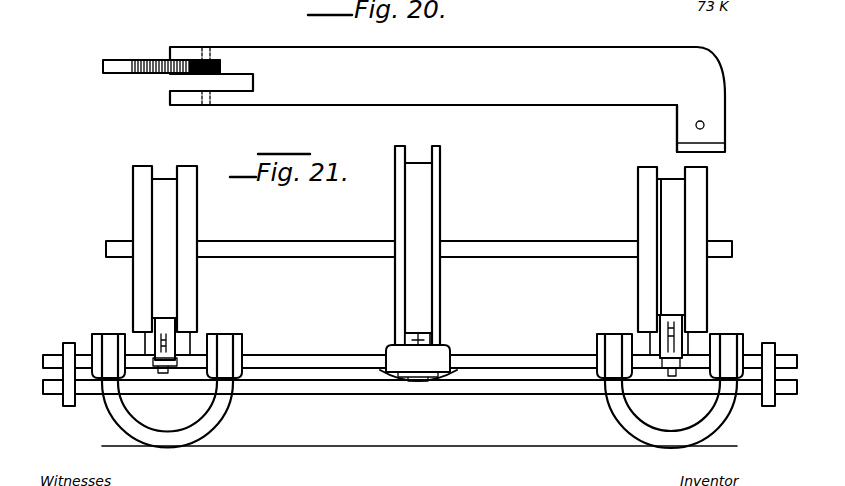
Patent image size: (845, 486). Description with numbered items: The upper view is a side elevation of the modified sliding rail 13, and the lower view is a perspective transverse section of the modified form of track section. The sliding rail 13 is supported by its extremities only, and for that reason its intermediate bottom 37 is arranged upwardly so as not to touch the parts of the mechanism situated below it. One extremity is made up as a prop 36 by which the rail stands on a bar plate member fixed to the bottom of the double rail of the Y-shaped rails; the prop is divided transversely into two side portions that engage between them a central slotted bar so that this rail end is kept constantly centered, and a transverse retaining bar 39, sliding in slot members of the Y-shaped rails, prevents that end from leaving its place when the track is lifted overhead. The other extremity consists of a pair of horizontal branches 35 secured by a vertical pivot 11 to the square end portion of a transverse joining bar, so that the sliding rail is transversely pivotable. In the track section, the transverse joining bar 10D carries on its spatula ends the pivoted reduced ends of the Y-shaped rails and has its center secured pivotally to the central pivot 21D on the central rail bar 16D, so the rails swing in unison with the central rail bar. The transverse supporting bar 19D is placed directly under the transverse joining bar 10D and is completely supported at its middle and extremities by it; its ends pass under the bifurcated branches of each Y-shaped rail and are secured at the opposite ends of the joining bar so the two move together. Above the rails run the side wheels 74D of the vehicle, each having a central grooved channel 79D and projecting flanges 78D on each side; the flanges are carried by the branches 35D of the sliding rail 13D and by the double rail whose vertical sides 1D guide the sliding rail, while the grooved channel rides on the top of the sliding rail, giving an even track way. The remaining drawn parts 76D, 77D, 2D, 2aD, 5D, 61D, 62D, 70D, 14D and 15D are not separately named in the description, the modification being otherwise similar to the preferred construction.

In FIG. 20, the vertical pivot 11 is at (203, 48).
In FIG. 20, the sliding rail 13 is at (472, 68).
In FIG. 20, the pair of branches 35 is at (122, 67).
In FIG. 21, the pair of branches 35 is at (695, 362).
In FIG. 20, the prop 36 is at (677, 135).
In FIG. 20, the intermediate bottom 37 is at (430, 98).
In FIG. 20, the transverse retaining bar 39 is at (705, 124).
In FIG. 21, the post 1D is at (158, 320).
In FIG. 21, the clamp 2D is at (108, 345).
In FIG. 21, the clamp 2aD is at (224, 345).
In FIG. 21, the hanger 5D is at (196, 433).
In FIG. 21, the transverse joining bar 10D is at (50, 362).
In FIG. 21, the post 13D is at (685, 327).
In FIG. 21, the nut 14D is at (393, 368).
In FIG. 21, the clamp block 15D is at (415, 360).
In FIG. 21, the central rail bar 16D is at (419, 345).
In FIG. 21, the transverse supporting bar 19D is at (158, 386).
In FIG. 21, the plate 21D is at (426, 333).
In FIG. 21, the rods 35D is at (190, 341).
In FIG. 21, the hanger leg 61D is at (222, 406).
In FIG. 21, the hanger leg 62D is at (600, 349).
In FIG. 21, the end block 70D is at (70, 399).
In FIG. 21, the axle 74D is at (133, 283).
In FIG. 21, the hub 76D is at (420, 232).
In FIG. 21, the flange 77D is at (395, 198).
In FIG. 21, the flange 78D is at (133, 201).
In FIG. 21, the hub 79D is at (168, 229).